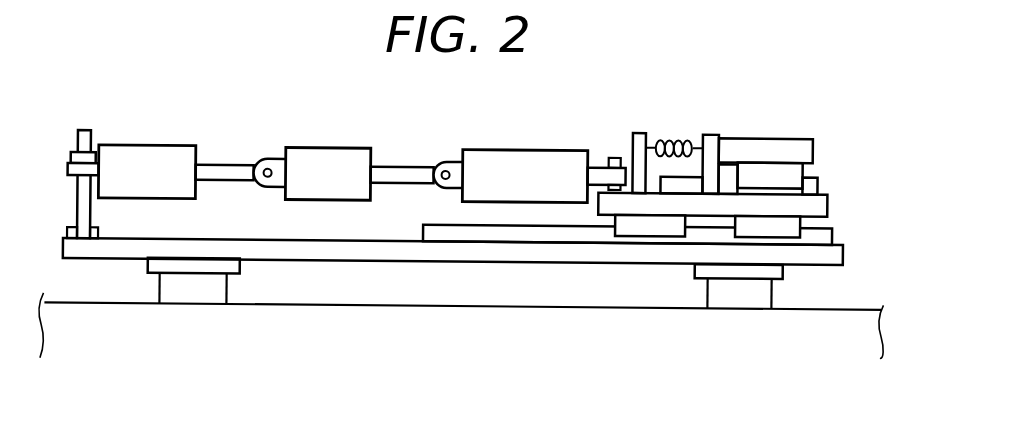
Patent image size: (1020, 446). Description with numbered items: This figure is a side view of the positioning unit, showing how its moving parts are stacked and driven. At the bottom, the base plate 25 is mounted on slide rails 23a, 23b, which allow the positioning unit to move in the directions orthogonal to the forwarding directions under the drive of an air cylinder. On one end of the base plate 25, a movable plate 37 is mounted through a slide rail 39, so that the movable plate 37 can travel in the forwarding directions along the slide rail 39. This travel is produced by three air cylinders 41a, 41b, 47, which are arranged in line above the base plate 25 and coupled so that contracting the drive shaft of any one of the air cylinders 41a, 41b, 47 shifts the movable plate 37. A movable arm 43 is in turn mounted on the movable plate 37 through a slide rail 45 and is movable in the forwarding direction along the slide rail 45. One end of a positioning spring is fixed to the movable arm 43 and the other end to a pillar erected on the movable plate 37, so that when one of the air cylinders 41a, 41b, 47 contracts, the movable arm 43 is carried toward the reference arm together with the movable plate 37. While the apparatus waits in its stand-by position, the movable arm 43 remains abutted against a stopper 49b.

The air cylinder 41a is at (167, 161).
The air cylinder 41b is at (340, 160).
The air cylinder 47 is at (555, 160).
The stopper 49b is at (710, 134).
The movable arm 43 is at (787, 140).
The slide rail 45 is at (810, 181).
The movable plate 37 is at (818, 201).
The slide rail 39 is at (820, 233).
The base plate 25 is at (832, 251).
The slide rail 23a is at (192, 296).
The slide rail 23b is at (730, 299).